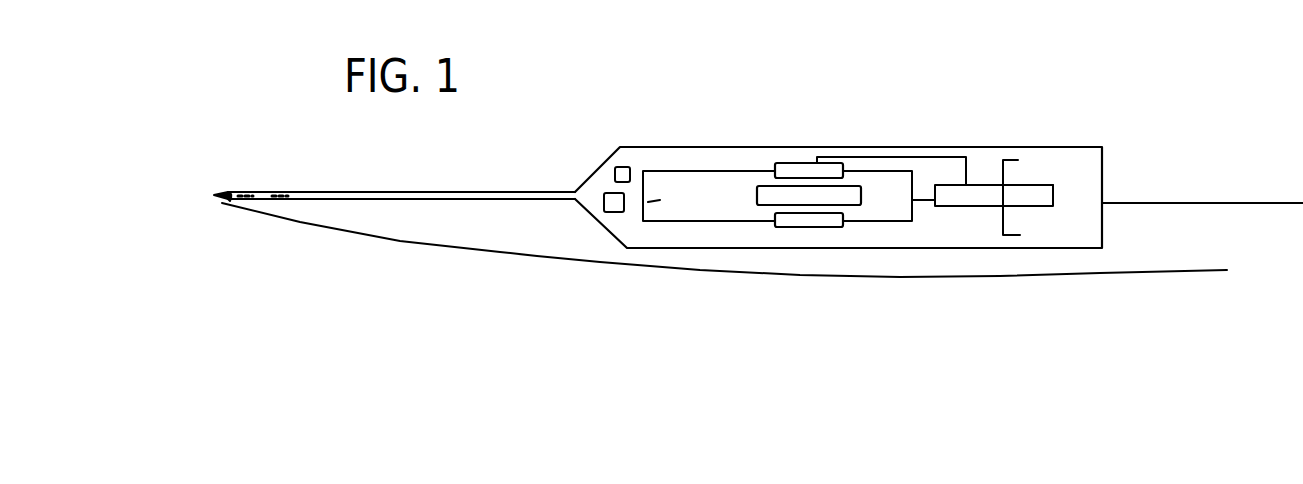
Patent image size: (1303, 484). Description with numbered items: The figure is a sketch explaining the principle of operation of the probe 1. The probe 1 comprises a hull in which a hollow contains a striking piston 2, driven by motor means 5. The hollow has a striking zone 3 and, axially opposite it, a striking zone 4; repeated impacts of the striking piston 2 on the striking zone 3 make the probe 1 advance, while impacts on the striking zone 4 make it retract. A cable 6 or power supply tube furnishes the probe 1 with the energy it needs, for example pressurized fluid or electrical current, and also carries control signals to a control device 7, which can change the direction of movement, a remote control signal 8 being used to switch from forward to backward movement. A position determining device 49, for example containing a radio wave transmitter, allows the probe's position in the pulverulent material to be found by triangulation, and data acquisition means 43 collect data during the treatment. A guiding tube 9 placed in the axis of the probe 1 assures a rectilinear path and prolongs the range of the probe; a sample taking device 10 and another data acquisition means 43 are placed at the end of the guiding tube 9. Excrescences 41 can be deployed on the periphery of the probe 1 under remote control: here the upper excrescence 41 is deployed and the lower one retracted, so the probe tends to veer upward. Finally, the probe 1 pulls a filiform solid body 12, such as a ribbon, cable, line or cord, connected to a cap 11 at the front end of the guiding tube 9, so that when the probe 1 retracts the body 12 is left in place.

The probe 1 is at (929, 143).
The striking piston 2 is at (860, 193).
The striking zone 3 is at (283, 192).
The striking zone 4 is at (913, 203).
The motor means 5 is at (822, 226).
The cable 6 is at (1198, 203).
The control device 7 is at (1053, 206).
The remote control signal 8 is at (1048, 176).
The guiding tube 9 is at (478, 190).
The sample taking device 10 is at (250, 192).
The cap 11 is at (223, 203).
The filiform solid body 12 is at (533, 254).
The excrescences 41 is at (1019, 152).
The data acquisition means 43 is at (623, 167).
The position determining device 49 is at (620, 212).